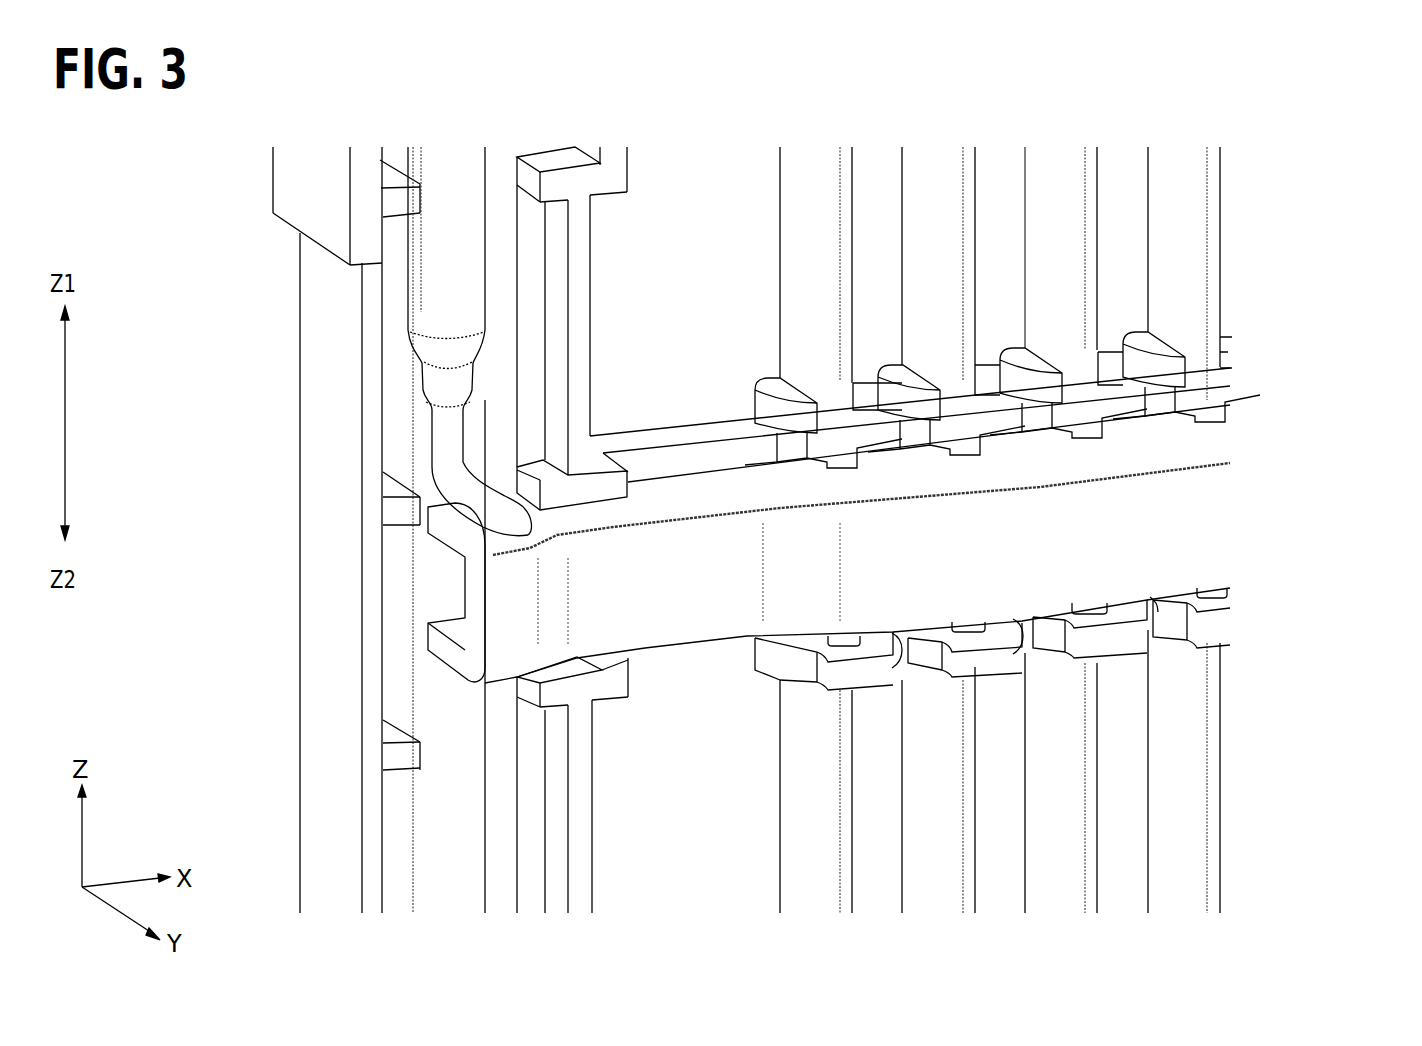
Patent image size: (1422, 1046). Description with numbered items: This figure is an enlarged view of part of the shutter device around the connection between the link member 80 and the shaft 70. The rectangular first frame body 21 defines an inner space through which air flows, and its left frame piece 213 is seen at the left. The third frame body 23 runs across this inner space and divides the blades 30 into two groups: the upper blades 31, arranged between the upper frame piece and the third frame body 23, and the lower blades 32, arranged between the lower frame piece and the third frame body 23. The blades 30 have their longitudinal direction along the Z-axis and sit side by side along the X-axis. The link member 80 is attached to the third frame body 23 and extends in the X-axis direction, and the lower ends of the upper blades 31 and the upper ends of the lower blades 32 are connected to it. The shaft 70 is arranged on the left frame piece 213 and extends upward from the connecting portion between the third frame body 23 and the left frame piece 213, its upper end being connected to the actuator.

The first frame body 21 is at (265, 180).
The left frame piece 213 is at (299, 585).
The shaft 70 is at (440, 297).
The third frame body 23 is at (655, 433).
The link member 80 is at (690, 655).
The blades 30 is at (1081, 498).
The upper blades 31 is at (1188, 275).
The lower blades 32 is at (1195, 722).